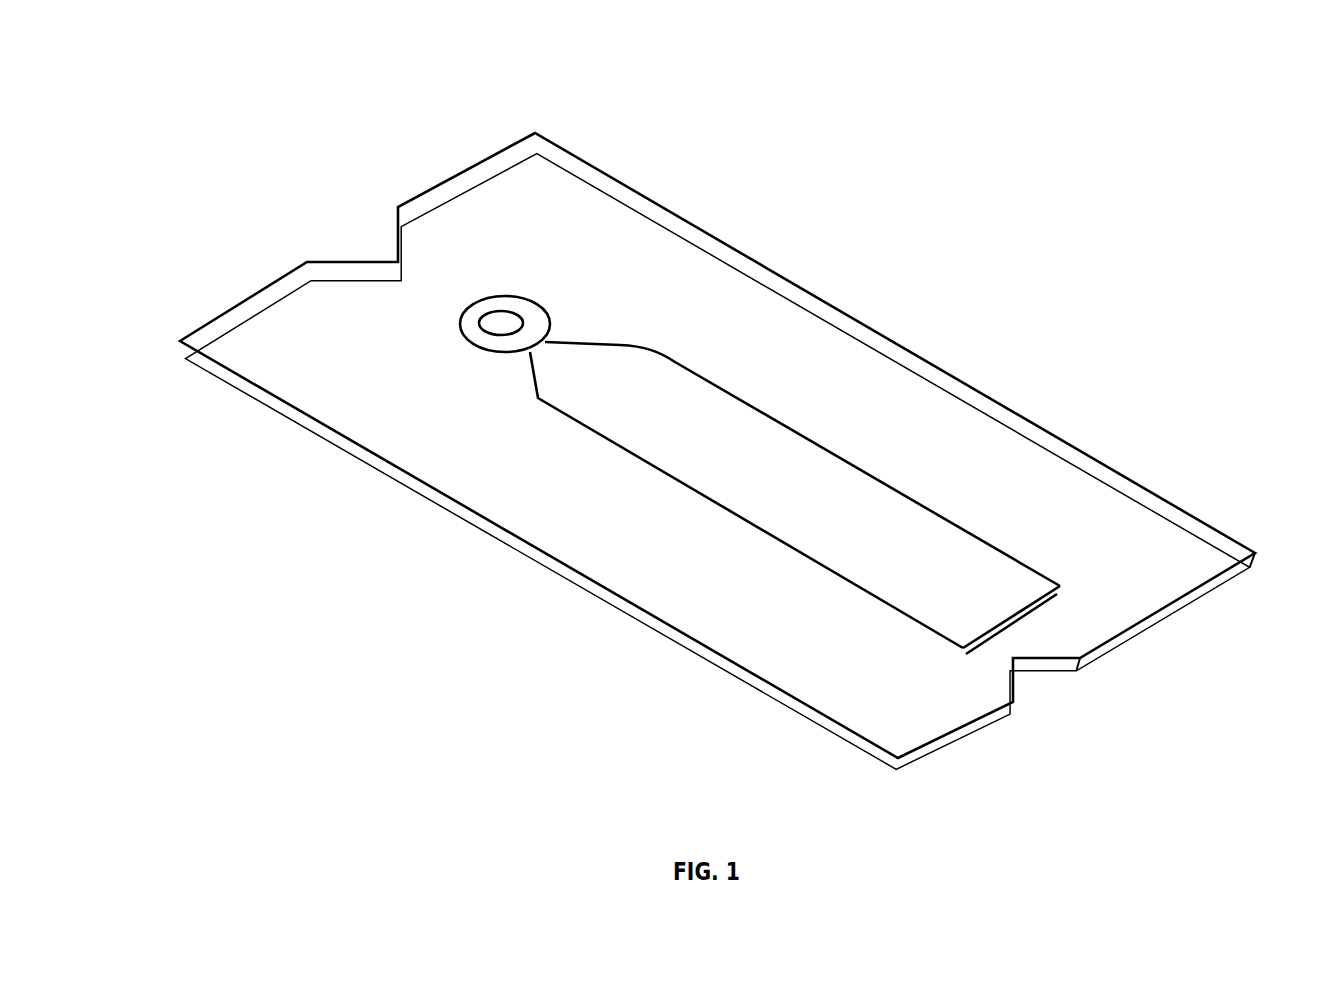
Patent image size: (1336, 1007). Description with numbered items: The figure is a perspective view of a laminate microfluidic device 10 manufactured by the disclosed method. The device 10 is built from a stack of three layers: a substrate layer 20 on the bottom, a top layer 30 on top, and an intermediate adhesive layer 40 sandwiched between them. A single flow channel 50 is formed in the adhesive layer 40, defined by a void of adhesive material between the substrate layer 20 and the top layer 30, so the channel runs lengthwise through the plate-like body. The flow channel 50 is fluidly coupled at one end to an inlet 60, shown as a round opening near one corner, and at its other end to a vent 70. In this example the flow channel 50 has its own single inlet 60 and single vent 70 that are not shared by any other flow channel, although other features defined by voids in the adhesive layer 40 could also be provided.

The laminate microfluidic device 10 is at (700, 390).
The substrate layer 20 is at (392, 496).
The top layer 30 is at (1065, 477).
The intermediate adhesive layer 40 is at (1167, 613).
The flow channel 50 is at (867, 525).
The inlet 60 is at (507, 322).
The vent 70 is at (1025, 610).